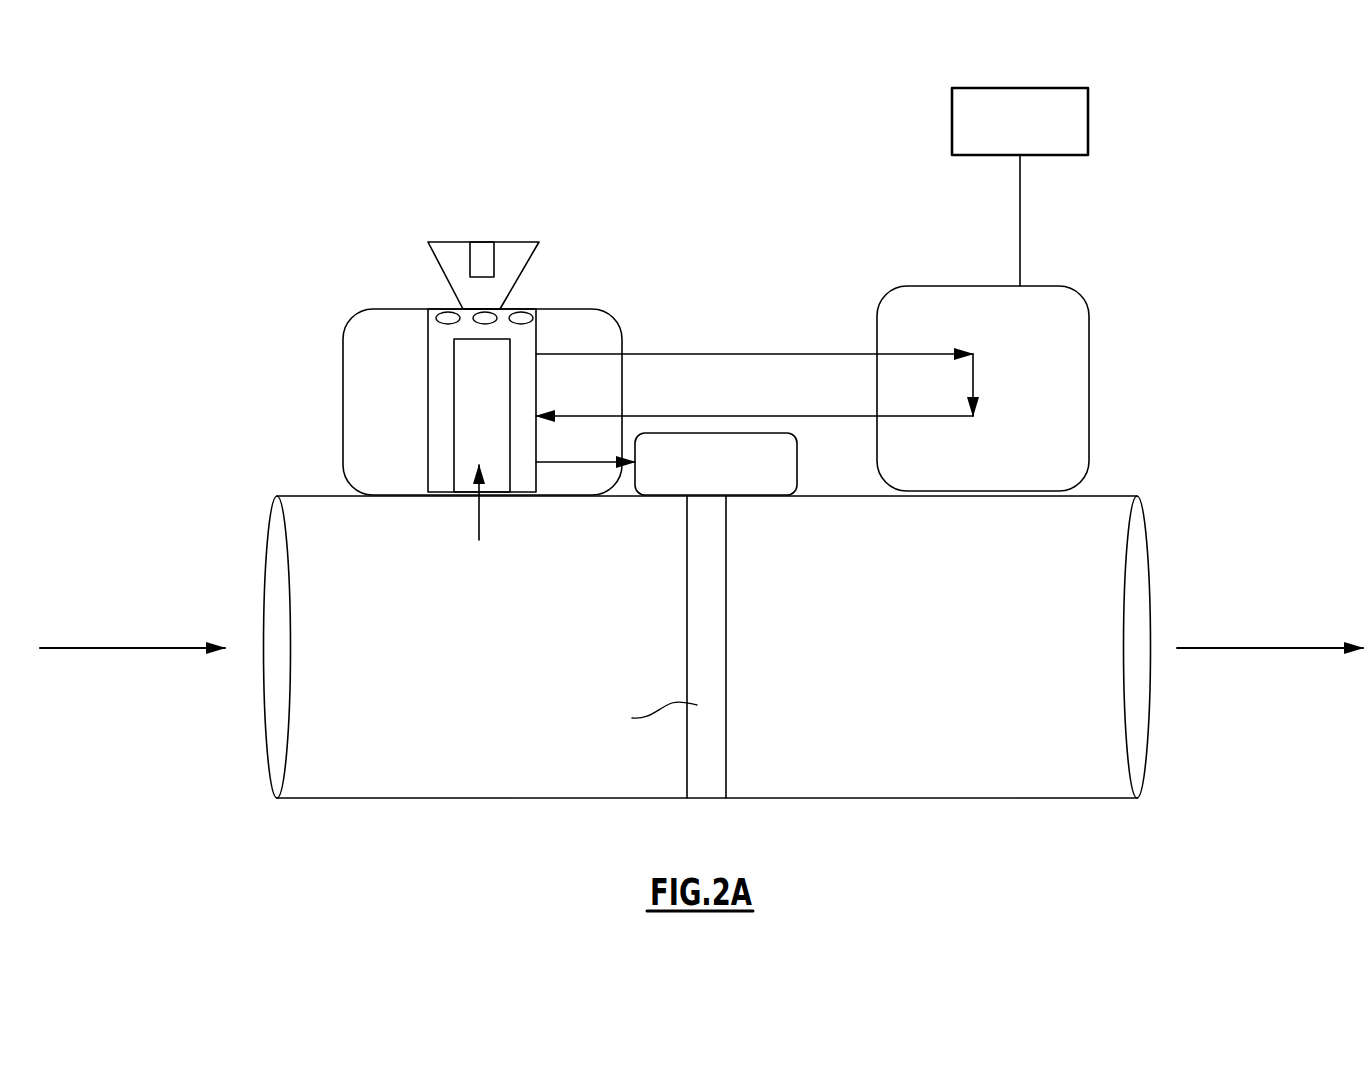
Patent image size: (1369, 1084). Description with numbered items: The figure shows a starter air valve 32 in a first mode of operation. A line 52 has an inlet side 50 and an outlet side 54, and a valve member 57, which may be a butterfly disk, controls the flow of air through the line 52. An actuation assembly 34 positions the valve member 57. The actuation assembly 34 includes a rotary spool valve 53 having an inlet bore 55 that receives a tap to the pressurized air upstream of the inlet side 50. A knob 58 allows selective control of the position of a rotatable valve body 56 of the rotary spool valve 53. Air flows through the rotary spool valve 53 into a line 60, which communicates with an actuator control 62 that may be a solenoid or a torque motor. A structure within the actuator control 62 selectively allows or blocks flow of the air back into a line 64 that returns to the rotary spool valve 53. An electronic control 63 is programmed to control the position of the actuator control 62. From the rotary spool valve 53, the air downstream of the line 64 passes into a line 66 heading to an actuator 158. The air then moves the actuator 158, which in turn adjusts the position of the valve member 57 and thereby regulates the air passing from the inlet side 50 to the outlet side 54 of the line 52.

The starter air valve 32 is at (1120, 202).
The actuation assembly 34 is at (653, 283).
The inlet side 50 is at (325, 515).
The line 52 is at (466, 768).
The rotary spool valve 53 is at (375, 347).
The outlet side 54 is at (1028, 601).
The inlet bore 55 is at (470, 452).
The rotatable valve body 56 is at (445, 348).
The valve member 57 is at (710, 650).
The knob 58 is at (455, 250).
The line 60 is at (740, 354).
The actuator control 62 is at (926, 308).
The electronic control 63 is at (952, 112).
The line 64 is at (818, 418).
The line 66 is at (572, 462).
The actuator 158 is at (663, 497).